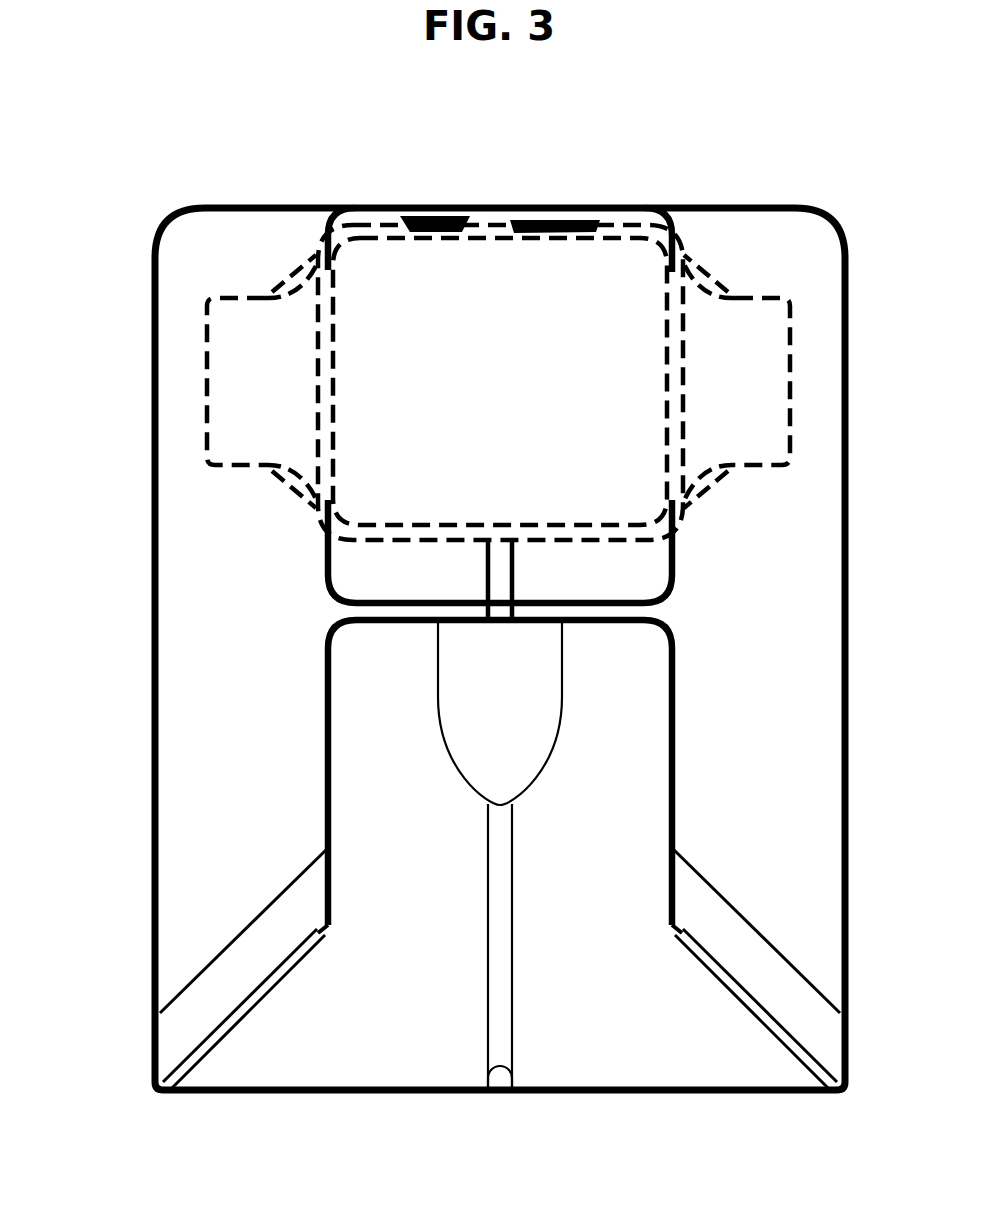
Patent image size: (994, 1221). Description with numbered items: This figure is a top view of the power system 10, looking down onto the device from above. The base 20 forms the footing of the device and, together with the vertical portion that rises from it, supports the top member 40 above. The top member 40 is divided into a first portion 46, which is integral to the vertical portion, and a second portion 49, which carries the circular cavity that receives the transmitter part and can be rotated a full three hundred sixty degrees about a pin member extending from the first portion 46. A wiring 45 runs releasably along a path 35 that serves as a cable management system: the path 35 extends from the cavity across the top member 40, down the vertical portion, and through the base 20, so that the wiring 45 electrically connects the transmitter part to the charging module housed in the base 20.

The power system 10 is at (90, 575).
The base 20 is at (848, 750).
The path 35 is at (488, 1082).
The top member 40 is at (322, 715).
The wiring 45 is at (500, 575).
The first portion 46 is at (372, 818).
The second portion 49 is at (340, 556).